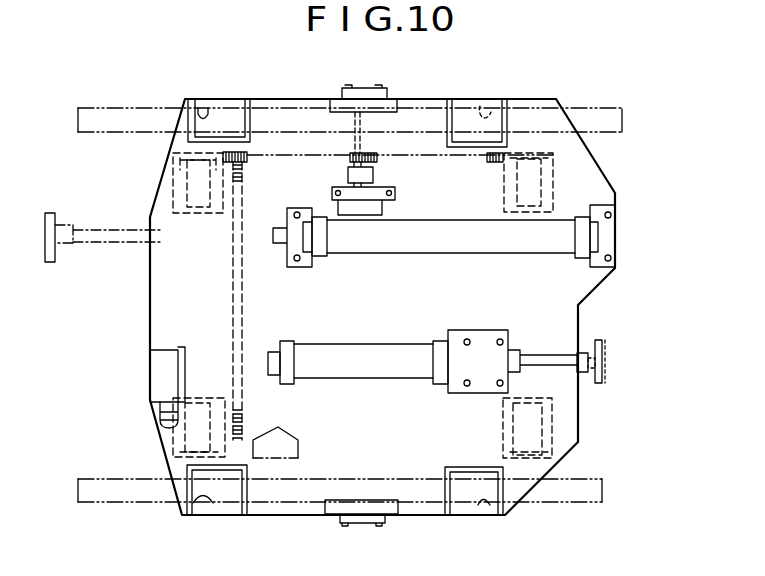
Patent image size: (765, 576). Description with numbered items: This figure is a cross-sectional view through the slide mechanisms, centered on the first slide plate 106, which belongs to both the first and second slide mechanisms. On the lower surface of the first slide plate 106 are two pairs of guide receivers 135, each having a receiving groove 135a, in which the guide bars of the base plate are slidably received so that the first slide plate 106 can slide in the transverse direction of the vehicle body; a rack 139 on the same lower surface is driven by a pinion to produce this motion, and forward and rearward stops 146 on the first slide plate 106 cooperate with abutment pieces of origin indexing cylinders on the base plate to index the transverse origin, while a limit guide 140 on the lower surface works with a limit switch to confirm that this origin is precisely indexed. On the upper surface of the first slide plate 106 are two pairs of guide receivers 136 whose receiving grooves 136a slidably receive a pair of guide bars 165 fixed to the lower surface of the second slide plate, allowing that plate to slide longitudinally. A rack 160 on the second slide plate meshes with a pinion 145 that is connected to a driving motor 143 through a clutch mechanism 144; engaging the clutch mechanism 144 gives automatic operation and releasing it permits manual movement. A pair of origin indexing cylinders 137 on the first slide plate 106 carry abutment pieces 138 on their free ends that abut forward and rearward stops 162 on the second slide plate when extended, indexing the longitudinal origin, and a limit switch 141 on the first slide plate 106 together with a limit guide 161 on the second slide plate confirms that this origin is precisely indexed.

The first slide plate 106 is at (556, 307).
The guide receiver 135 is at (175, 175).
The receiving groove 135a is at (176, 168).
The guide receiver 136 is at (228, 103).
The receiving groove 136a is at (205, 112).
The origin indexing cylinder 137 is at (545, 238).
The abutment piece 138 is at (275, 240).
The rack 139 is at (233, 298).
The limit guide 140 is at (520, 132).
The limit switch 141 is at (156, 368).
The driving motor 143 is at (348, 174).
The clutch mechanism 144 is at (345, 207).
The pinion 145 is at (355, 160).
The stop 146 is at (366, 93).
The rack 160 is at (410, 152).
The limit guide 161 is at (290, 460).
The stop 162 is at (50, 212).
The guide bar 165 is at (607, 112).